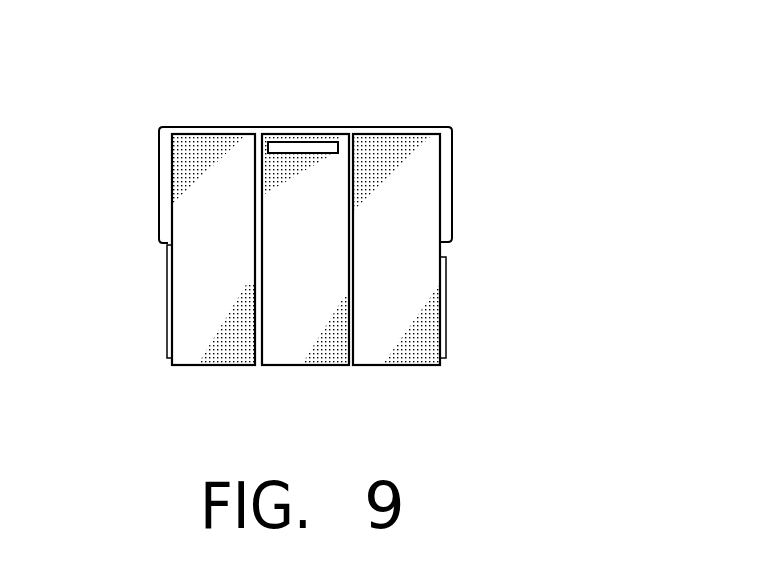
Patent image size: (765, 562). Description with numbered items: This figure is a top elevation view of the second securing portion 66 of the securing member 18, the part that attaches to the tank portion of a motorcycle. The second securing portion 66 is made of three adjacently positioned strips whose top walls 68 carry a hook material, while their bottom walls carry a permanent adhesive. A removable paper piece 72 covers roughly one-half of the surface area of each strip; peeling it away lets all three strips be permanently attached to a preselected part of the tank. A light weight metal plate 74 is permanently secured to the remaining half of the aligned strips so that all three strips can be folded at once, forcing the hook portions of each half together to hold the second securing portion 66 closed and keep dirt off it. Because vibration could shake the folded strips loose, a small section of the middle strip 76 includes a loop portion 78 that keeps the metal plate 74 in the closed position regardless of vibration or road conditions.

The securing member 18 is at (425, 72).
The second securing portion 66 is at (168, 257).
The top walls 68 is at (190, 348).
The removable paper piece 72 is at (443, 325).
The metal plate 74 is at (448, 180).
The middle strip 76 is at (287, 323).
The loop portion 78 is at (310, 146).